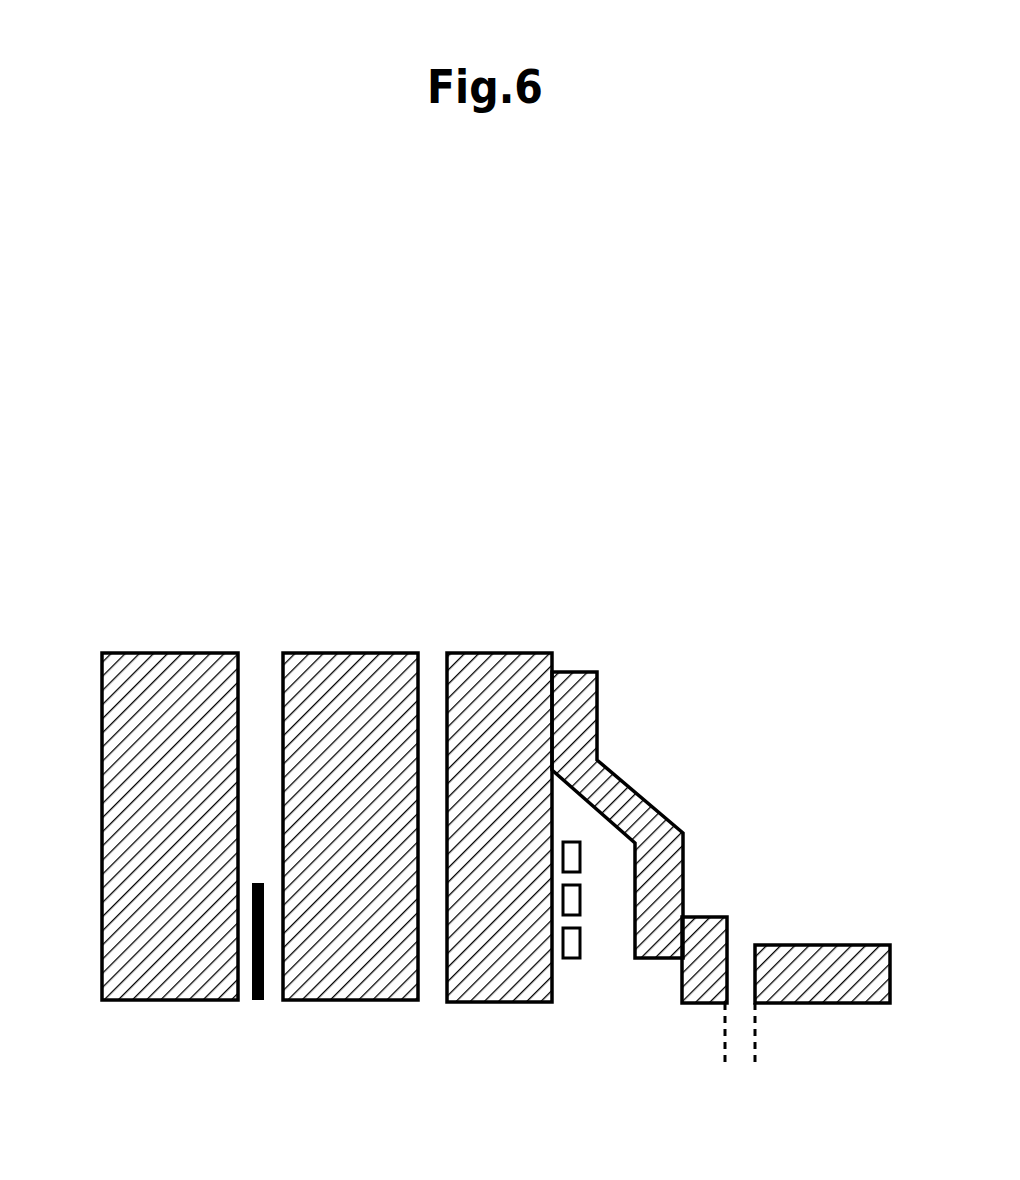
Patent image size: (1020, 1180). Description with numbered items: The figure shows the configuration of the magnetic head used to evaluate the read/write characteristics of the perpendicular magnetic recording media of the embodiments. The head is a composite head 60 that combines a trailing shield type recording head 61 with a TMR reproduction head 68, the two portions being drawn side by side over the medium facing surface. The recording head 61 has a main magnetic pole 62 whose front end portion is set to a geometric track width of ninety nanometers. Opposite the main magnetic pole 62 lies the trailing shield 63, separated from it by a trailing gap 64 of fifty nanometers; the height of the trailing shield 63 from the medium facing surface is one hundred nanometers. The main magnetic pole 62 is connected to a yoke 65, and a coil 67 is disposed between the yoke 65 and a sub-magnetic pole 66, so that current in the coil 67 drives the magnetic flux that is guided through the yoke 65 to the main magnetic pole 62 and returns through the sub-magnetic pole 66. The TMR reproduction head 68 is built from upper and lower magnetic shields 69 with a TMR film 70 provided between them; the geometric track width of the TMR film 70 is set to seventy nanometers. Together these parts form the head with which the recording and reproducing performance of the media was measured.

The composite head 60 is at (63, 378).
The recording head 61 is at (863, 627).
The main magnetic pole 62 is at (712, 917).
The trailing shield 63 is at (790, 943).
The trailing gap 64 is at (748, 1033).
The yoke 65 is at (608, 768).
The sub-magnetic pole 66 is at (483, 992).
The coil 67 is at (580, 893).
The TMR reproduction head 68 is at (482, 480).
The magnetic shields 69 is at (155, 653).
The TMR film 70 is at (259, 883).